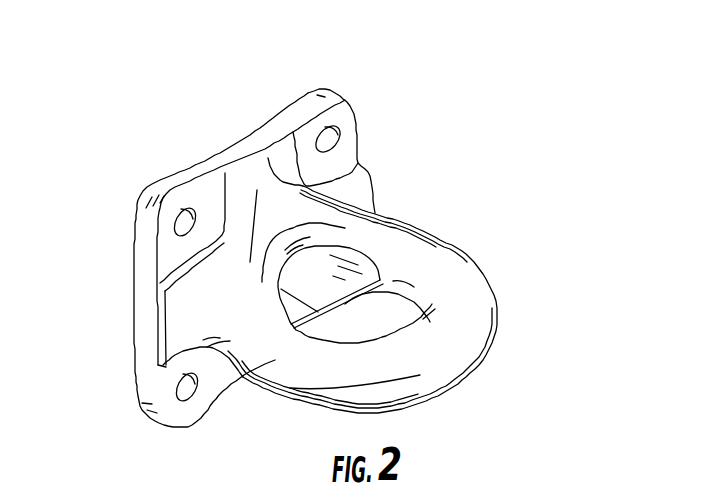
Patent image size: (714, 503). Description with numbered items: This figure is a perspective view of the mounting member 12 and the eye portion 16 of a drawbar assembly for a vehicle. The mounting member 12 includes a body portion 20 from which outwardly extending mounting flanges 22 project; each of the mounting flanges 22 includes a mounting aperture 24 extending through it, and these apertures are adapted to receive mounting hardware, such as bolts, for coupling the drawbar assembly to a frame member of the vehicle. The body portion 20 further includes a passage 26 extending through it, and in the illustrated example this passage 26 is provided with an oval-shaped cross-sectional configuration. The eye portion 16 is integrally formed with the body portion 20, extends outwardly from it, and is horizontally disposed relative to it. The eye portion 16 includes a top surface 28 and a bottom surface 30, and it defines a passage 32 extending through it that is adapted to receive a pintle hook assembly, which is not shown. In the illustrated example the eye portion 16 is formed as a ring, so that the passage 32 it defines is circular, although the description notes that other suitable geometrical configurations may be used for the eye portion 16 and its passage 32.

The mounting member 12 is at (131, 284).
The eye portion 16 is at (457, 383).
The body portion 20 is at (132, 340).
The mounting flanges 22 is at (352, 118).
The mounting aperture 24 is at (340, 134).
The passage 26 is at (325, 272).
The top surface 28 is at (408, 243).
The bottom surface 30 is at (337, 413).
The passage 32 is at (361, 321).